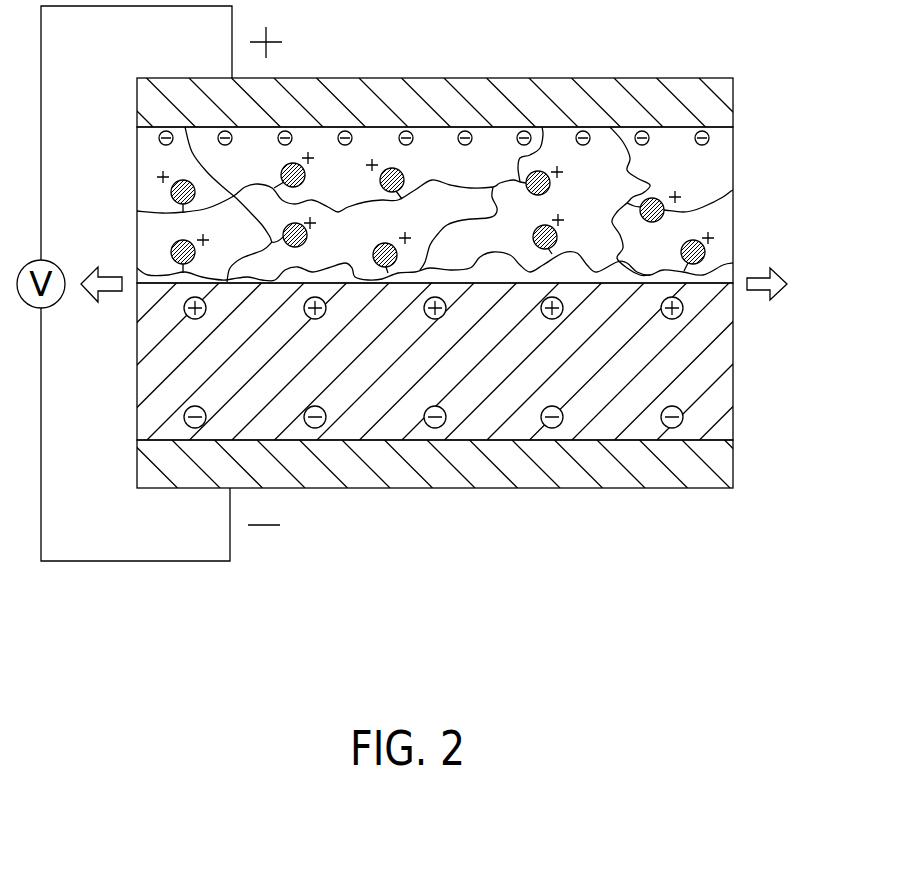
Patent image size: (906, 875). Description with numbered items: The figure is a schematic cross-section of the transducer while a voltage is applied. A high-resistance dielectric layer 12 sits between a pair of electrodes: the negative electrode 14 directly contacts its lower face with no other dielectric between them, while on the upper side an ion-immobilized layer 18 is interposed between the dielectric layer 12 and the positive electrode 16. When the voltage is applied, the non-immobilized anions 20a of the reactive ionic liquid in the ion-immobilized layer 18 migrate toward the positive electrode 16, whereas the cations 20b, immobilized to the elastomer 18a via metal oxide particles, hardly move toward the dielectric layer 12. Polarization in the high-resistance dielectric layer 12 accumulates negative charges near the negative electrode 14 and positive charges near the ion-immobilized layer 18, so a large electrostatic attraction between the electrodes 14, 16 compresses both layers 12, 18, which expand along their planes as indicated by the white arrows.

The high-resistance dielectric layer 12 is at (733, 347).
The negative electrode 14 is at (733, 470).
The positive electrode 16 is at (733, 108).
The ion-immobilized layer 18 is at (733, 223).
The elastomer 18a is at (718, 265).
The non-immobilized anions 20a is at (709, 137).
The cations 20b is at (733, 190).